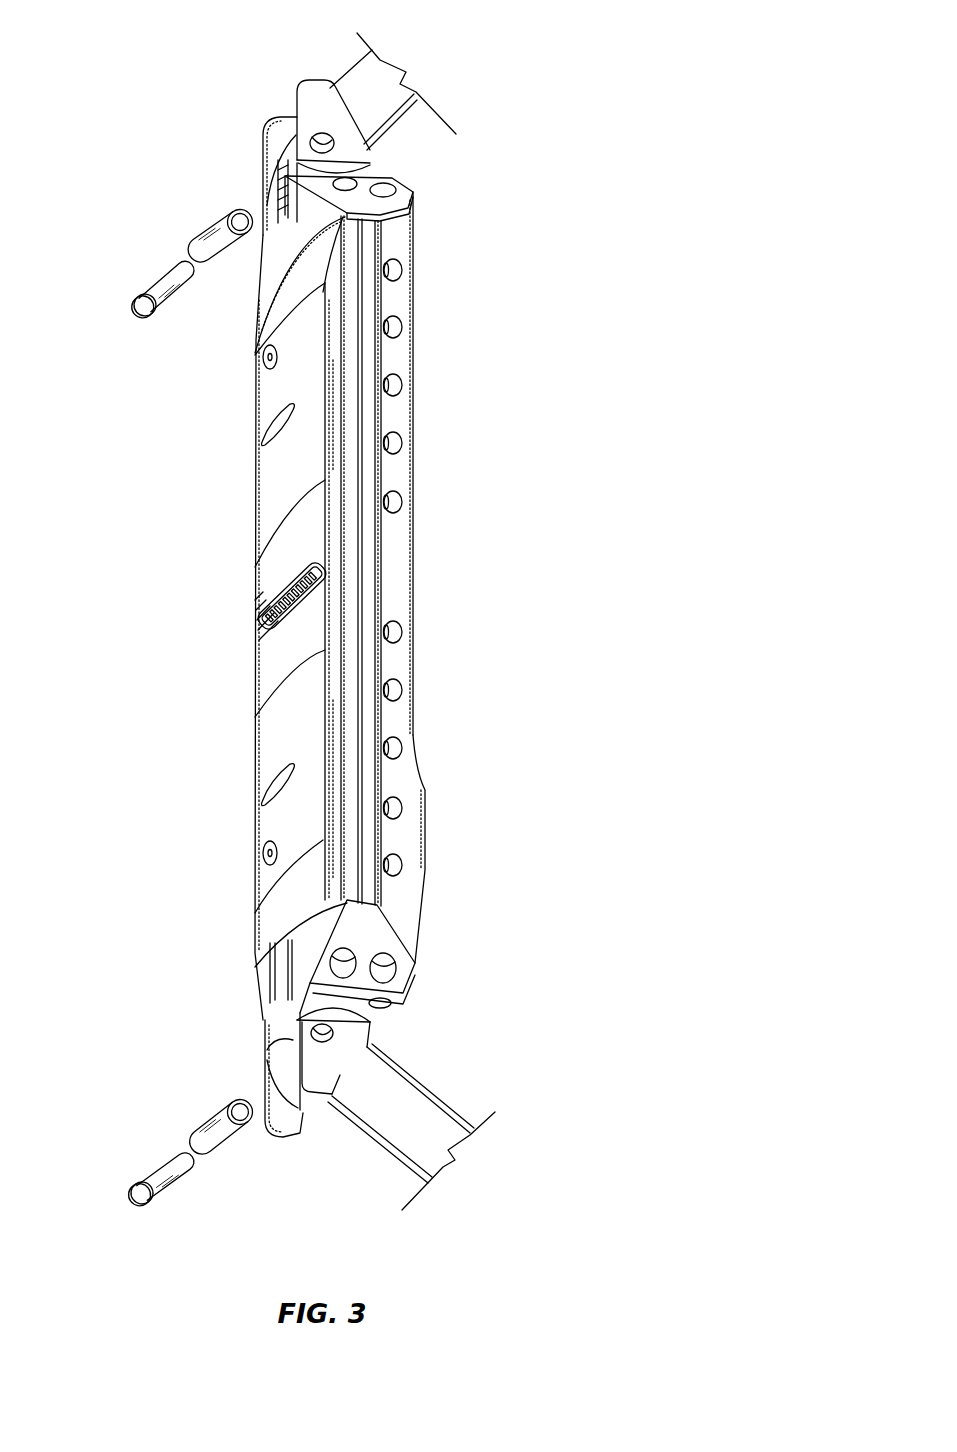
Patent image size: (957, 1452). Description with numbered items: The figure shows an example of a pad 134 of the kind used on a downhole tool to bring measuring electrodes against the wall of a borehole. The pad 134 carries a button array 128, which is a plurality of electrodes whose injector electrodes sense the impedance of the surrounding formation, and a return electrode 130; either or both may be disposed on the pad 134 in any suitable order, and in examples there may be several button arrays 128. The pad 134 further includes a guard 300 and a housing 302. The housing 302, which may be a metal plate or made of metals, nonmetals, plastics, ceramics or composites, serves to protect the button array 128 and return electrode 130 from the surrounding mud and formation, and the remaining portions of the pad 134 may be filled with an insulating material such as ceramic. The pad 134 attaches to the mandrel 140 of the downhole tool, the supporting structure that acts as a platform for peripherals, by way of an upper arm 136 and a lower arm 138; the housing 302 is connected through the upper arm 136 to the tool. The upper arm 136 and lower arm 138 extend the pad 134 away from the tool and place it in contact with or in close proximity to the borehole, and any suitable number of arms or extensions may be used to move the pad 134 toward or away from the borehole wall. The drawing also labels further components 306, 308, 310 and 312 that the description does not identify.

The button array 128 is at (275, 556).
The return electrode 130 is at (260, 410).
The pad 134 is at (440, 545).
The upper arm 136 is at (383, 78).
The lower arm 138 is at (435, 1115).
The mandrel 140 is at (217, 233).
The guard 300 is at (266, 640).
The housing 302 is at (303, 265).
The upper hinge bracket 306 is at (270, 100).
The lower hinge bracket 308 is at (228, 1065).
The retaining pin 310 is at (158, 283).
The bracket tab 312 is at (353, 1032).